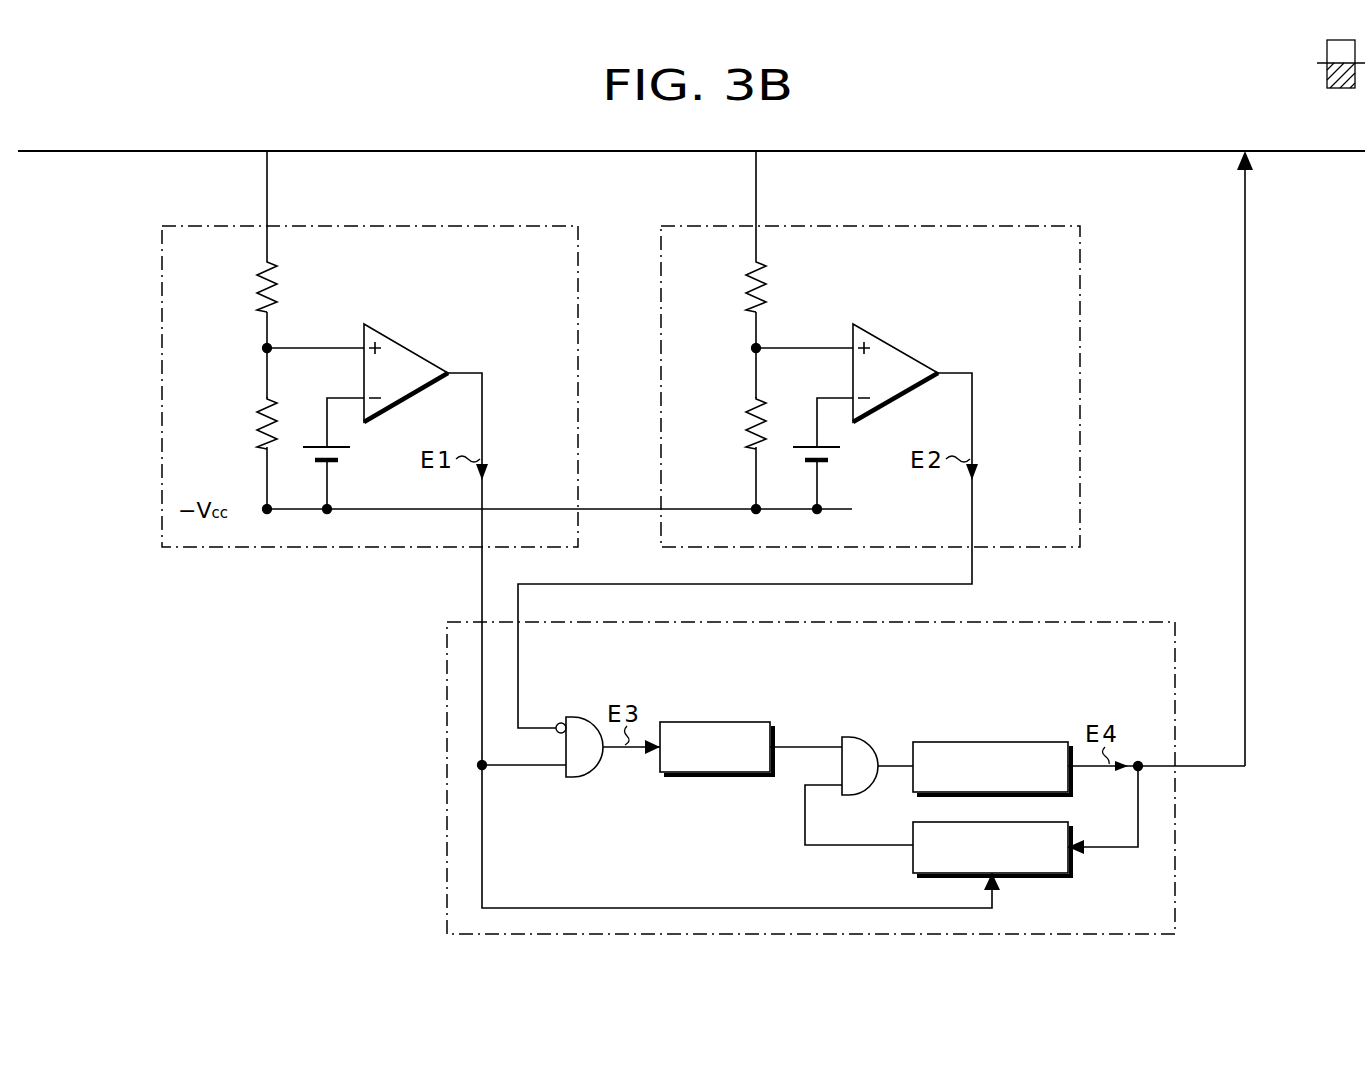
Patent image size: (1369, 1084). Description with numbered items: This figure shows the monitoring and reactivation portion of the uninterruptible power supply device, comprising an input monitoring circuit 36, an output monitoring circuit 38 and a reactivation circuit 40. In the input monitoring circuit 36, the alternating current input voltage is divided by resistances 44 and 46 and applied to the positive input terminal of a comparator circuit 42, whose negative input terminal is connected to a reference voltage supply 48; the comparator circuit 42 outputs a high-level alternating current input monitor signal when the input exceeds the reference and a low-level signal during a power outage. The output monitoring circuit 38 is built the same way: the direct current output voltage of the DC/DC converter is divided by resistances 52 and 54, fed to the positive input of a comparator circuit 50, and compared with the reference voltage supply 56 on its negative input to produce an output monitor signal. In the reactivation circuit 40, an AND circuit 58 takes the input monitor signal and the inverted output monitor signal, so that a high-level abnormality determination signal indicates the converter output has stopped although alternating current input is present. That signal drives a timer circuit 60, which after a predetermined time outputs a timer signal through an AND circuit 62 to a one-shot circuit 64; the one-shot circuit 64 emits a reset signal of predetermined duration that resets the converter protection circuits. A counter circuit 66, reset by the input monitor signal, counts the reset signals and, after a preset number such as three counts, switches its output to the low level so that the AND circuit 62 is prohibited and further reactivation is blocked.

The input monitoring circuit 36 is at (422, 224).
The output monitoring circuit 38 is at (923, 224).
The reactivation circuit 40 is at (1056, 621).
The comparator circuit 42 is at (409, 348).
The resistance 44 is at (257, 287).
The resistance 46 is at (257, 424).
The reference voltage supply 48 is at (343, 450).
The comparator circuit 50 is at (896, 348).
The resistance 52 is at (744, 287).
The resistance 54 is at (744, 424).
The reference voltage supply 56 is at (833, 450).
The AND circuit 58 is at (576, 779).
The timer circuit 60 is at (724, 777).
The AND circuit 62 is at (860, 737).
The one-shot circuit 64 is at (985, 742).
The counter circuit 66 is at (1048, 878).